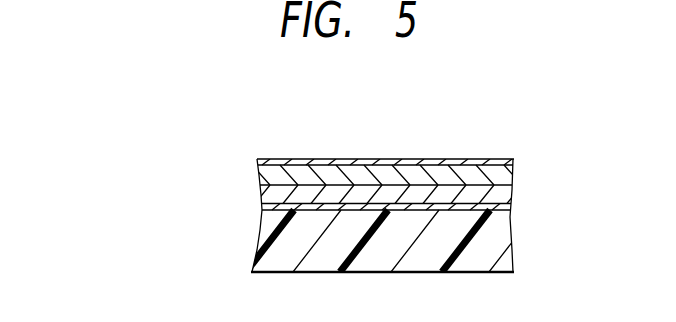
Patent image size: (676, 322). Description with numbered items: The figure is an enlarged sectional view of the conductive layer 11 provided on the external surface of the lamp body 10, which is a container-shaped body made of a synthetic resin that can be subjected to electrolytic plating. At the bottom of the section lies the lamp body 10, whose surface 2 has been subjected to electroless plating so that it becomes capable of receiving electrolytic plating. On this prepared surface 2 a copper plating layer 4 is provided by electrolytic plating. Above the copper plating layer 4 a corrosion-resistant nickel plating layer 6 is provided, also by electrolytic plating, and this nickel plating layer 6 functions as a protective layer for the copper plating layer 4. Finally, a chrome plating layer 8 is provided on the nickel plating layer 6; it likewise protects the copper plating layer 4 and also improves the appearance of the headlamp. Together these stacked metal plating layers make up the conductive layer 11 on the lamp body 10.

The surface 2 is at (262, 222).
The copper plating layer 4 is at (262, 198).
The nickel plating layer 6 is at (263, 177).
The chrome plating layer 8 is at (266, 158).
The lamp body 10 is at (495, 238).
The conductive layer 11 is at (185, 88).